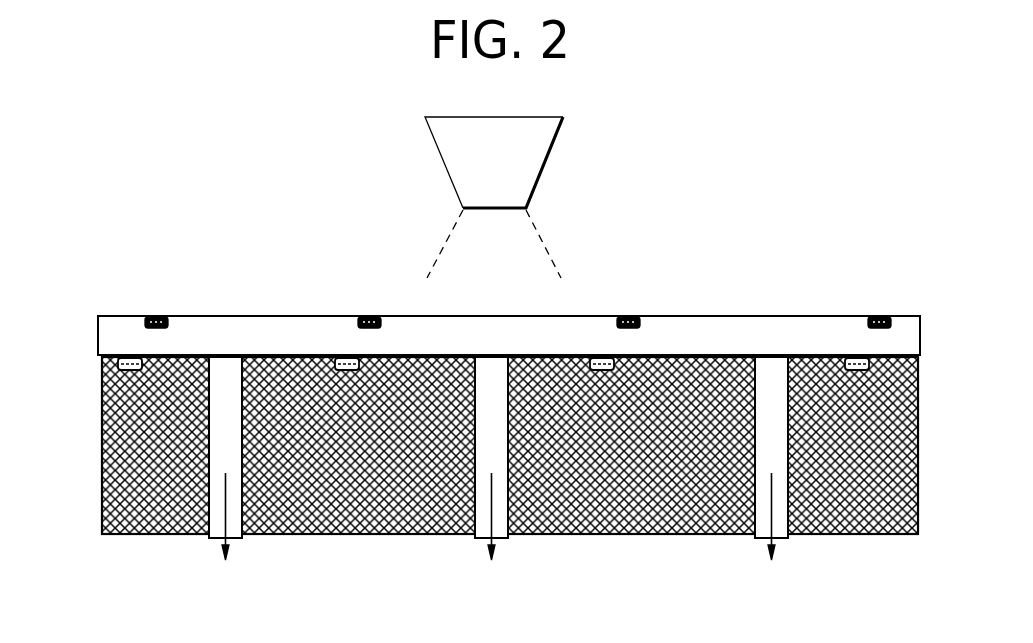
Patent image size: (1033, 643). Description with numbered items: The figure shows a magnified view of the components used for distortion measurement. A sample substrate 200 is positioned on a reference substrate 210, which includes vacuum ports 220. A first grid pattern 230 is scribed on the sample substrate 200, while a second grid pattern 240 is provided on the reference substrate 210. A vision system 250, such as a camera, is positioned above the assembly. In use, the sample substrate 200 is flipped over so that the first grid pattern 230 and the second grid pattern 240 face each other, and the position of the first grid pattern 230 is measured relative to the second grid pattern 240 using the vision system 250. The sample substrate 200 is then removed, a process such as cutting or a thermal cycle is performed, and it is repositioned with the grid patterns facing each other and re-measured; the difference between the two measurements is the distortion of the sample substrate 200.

The sample substrate 200 is at (293, 316).
The reference substrate 210 is at (360, 535).
The vacuum ports 220 is at (510, 457).
The first grid pattern 230 is at (152, 316).
The second grid pattern 240 is at (125, 364).
The vision system 250 is at (545, 162).